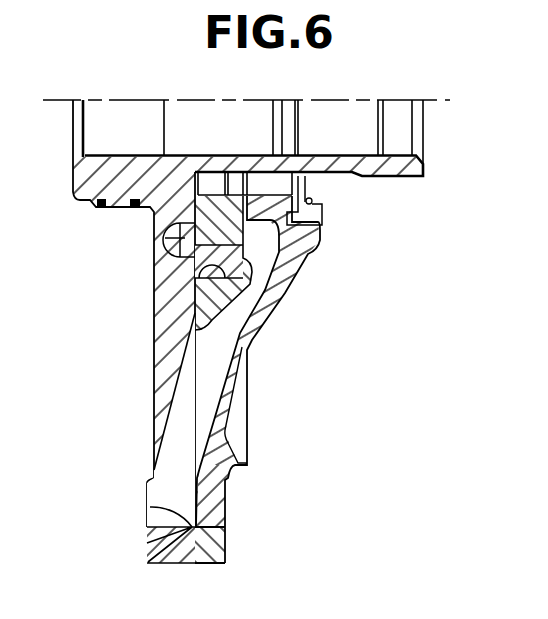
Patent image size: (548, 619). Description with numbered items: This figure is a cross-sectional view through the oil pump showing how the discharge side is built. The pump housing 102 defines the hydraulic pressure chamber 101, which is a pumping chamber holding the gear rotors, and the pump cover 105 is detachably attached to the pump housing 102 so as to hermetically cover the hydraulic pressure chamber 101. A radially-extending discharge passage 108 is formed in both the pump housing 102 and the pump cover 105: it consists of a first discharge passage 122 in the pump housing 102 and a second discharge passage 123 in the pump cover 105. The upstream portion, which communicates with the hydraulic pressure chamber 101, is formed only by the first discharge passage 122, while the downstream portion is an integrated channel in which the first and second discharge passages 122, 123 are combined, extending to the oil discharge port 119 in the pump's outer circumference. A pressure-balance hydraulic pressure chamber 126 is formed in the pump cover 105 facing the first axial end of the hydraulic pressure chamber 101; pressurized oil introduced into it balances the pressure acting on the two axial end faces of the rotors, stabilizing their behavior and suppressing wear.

The hydraulic pressure chamber 101 is at (195, 262).
The pump housing 102 is at (225, 546).
The pump cover 105 is at (162, 562).
The discharge passage 108 is at (153, 380).
The oil discharge port 119 is at (180, 528).
The first discharge passage 122 is at (262, 292).
The second discharge passage 123 is at (178, 437).
The pressure-balance hydraulic pressure chamber 126 is at (165, 238).